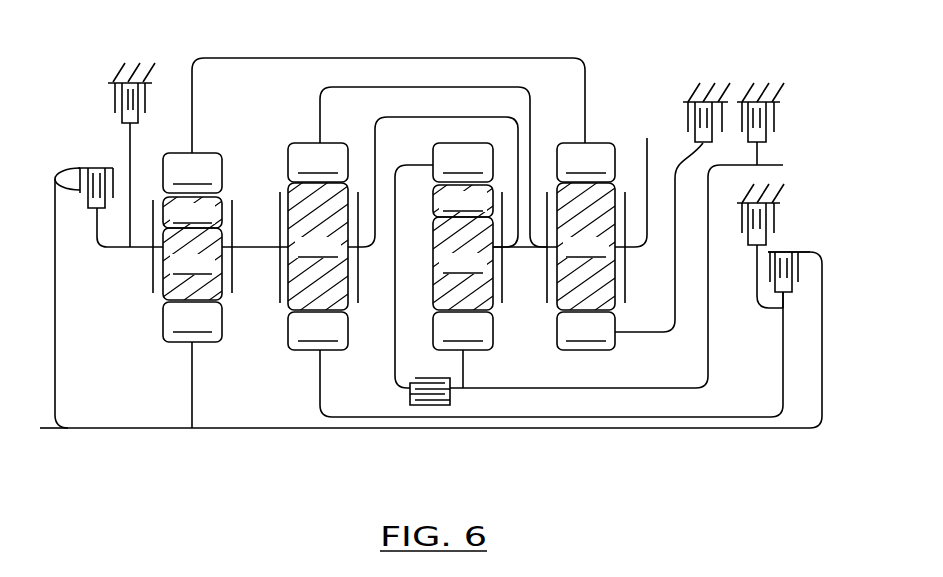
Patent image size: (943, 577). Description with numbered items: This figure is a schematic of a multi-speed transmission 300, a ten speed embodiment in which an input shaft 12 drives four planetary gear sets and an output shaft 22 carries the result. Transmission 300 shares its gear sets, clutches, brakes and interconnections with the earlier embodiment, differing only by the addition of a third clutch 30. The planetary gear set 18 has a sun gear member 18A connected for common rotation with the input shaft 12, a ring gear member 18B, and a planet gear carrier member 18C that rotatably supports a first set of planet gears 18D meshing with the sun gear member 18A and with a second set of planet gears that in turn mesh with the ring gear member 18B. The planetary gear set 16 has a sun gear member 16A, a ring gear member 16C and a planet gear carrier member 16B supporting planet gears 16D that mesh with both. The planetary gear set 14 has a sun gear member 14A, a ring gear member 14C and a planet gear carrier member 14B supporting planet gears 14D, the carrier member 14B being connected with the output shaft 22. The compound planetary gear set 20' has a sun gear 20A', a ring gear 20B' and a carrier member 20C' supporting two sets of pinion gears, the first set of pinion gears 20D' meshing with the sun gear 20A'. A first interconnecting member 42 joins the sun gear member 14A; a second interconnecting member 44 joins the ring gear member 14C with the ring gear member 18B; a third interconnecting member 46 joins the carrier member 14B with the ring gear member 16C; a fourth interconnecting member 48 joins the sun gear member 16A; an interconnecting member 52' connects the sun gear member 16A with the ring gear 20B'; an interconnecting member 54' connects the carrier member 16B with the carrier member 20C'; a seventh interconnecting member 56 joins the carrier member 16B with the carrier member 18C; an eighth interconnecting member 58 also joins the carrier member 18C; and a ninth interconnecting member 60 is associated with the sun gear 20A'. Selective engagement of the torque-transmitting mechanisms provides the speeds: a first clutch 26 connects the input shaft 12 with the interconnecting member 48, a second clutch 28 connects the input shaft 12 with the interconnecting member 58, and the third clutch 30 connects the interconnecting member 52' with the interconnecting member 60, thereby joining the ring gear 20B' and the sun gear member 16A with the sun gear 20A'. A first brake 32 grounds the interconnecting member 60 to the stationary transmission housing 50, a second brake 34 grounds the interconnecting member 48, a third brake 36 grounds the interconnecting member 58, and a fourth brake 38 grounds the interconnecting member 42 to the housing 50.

The input shaft 12 is at (95, 430).
The planetary gear set 14 is at (586, 309).
The sun gear member 14A is at (587, 369).
The planet gear carrier member 14B is at (627, 297).
The ring gear member 14C is at (586, 162).
The planet gears 14D is at (586, 244).
The planetary gear set 16 is at (310, 283).
The sun gear member 16A is at (299, 364).
The planet gear carrier member 16B is at (279, 200).
The ring gear member 16C is at (318, 162).
The planet gears 16D is at (318, 243).
The planetary gear set 18 is at (199, 288).
The sun gear member 18A is at (209, 361).
The ring gear member 18B is at (192, 173).
The planet gear carrier member 18C is at (152, 275).
The first set of planet gears 18D is at (192, 249).
The compound planetary gear set 20' is at (472, 310).
The sun gear 20A' is at (463, 350).
The ring gear 20B' is at (463, 162).
The carrier member 20C' is at (538, 200).
The pinion gears 20D' is at (463, 245).
The output shaft 22 is at (642, 152).
The first clutch 26 is at (769, 267).
The second clutch 28 is at (56, 176).
The third clutch 30 is at (437, 406).
The first brake 32 is at (774, 118).
The second brake 34 is at (774, 226).
The third brake 36 is at (113, 105).
The fourth brake 38 is at (688, 117).
The first interconnecting member 42 is at (676, 307).
The second interconnecting member 44 is at (447, 58).
The third interconnecting member 46 is at (498, 87).
The fourth interconnecting member 48 is at (705, 417).
The transmission housing 50 is at (110, 82).
The interconnecting member 52' is at (399, 321).
The interconnecting member 54' is at (427, 171).
The seventh interconnecting member 56 is at (258, 247).
The eighth interconnecting member 58 is at (115, 248).
The ninth interconnecting member 60 is at (709, 353).
The multi-speed transmission 300 is at (630, 73).